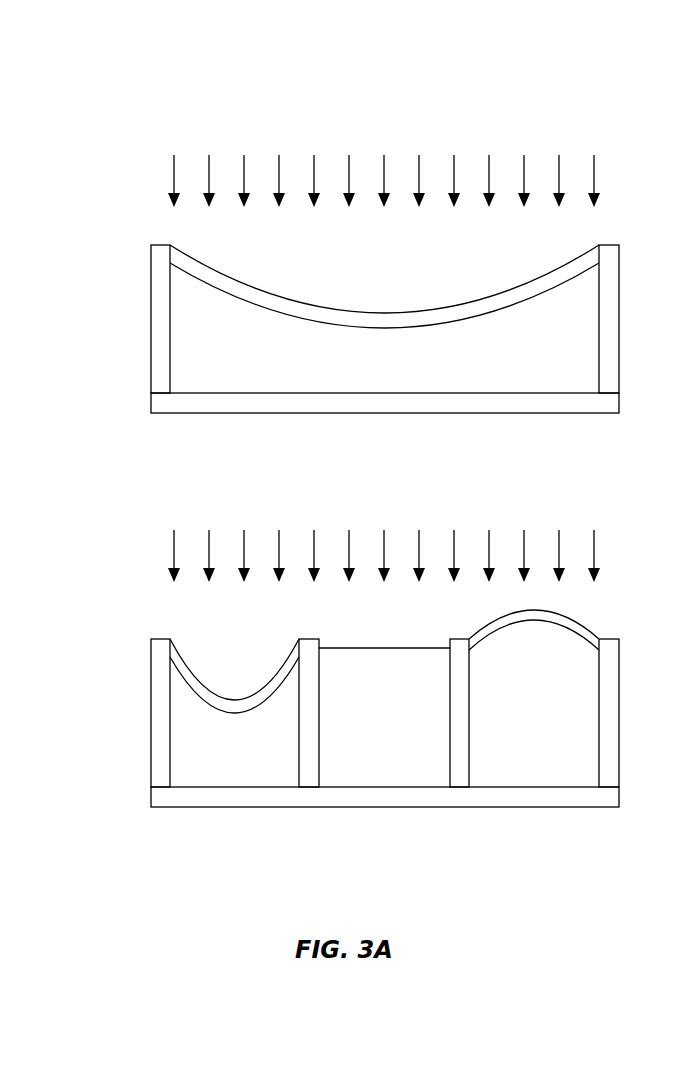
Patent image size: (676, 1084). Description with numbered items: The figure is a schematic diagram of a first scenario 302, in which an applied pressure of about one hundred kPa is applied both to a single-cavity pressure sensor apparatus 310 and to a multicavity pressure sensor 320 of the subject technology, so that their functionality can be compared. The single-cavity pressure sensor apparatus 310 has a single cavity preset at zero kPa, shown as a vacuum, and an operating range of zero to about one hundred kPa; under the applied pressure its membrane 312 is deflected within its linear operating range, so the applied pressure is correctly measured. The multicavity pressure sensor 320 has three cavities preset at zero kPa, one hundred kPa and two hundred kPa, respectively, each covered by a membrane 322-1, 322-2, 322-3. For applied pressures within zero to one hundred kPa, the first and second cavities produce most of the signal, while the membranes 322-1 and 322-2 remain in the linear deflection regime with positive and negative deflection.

The first scenario 302 is at (182, 49).
The single-cavity pressure sensor apparatus 310 is at (148, 232).
The membrane 312 is at (293, 292).
The multicavity pressure sensor 320 is at (148, 625).
The membrane 322-1 is at (210, 681).
The membrane 322-2 is at (369, 658).
The membrane 322-3 is at (505, 634).